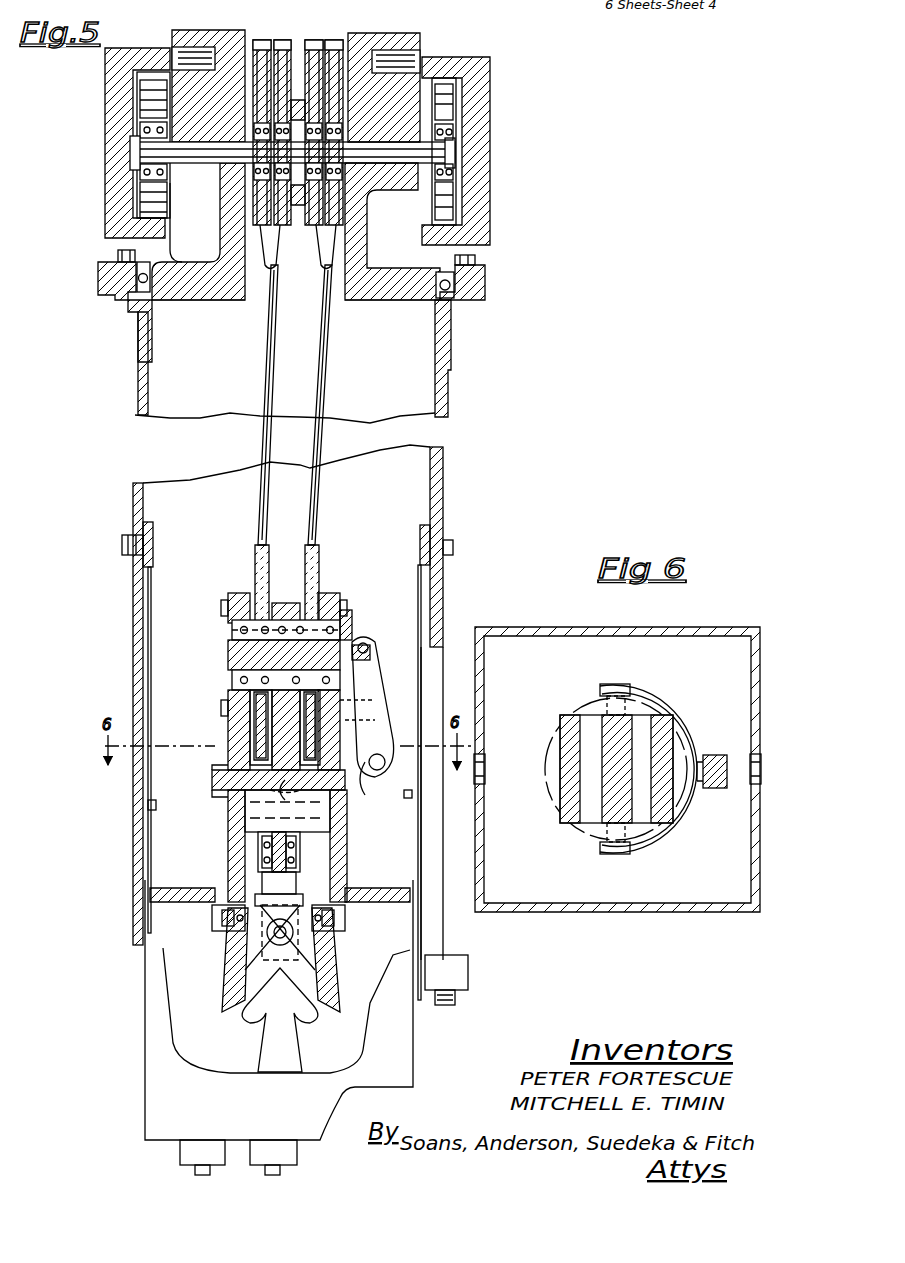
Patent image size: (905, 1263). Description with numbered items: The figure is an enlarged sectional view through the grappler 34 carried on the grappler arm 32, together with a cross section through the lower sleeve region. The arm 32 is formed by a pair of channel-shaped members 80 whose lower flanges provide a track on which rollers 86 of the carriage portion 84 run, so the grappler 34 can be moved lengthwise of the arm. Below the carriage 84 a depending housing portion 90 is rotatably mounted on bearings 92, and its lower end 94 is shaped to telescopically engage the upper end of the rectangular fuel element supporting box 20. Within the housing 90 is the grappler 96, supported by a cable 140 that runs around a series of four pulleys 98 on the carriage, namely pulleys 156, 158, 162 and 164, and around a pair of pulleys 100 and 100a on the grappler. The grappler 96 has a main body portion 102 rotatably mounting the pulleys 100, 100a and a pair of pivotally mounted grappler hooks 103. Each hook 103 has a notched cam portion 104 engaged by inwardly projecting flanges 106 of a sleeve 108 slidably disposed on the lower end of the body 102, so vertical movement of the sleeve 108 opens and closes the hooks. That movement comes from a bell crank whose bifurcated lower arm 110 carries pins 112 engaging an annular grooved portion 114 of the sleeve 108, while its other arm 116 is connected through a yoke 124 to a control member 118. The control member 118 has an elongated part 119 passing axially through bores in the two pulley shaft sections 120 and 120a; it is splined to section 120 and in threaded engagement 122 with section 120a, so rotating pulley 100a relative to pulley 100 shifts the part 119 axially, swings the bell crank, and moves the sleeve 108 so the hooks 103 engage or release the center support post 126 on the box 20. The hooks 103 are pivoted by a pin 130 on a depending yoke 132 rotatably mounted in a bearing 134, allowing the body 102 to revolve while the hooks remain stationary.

In FIG. 5, the fuel element supporting box 20 is at (415, 1045).
In FIG. 5, the grappler arm 32 is at (492, 152).
In FIG. 5, the grappler 34 is at (235, 355).
In FIG. 5, the channel-shaped members 80 is at (105, 198).
In FIG. 5, the carriage portion 84 is at (412, 34).
In FIG. 5, the rollers 86 is at (452, 202).
In FIG. 5, the housing portion 90 is at (452, 390).
In FIG. 5, the bearings 92 is at (436, 290).
In FIG. 5, the lower end of housing 94 is at (430, 940).
In FIG. 6, the lower end of housing 94 is at (617, 785).
In FIG. 5, the grappler 96 is at (225, 890).
In FIG. 5, the pulleys 98 is at (314, 44).
In FIG. 5, the pulley 100 is at (256, 552).
In FIG. 5, the pulley 100a is at (320, 553).
In FIG. 5, the main body portion 102 is at (232, 747).
In FIG. 5, the grappler hooks 103 is at (330, 970).
In FIG. 5, the notched cam portion 104 is at (212, 918).
In FIG. 5, the flanges 106 is at (333, 934).
In FIG. 5, the sleeve 108 is at (345, 862).
In FIG. 5, the bifurcated lower arm 110 is at (374, 780).
In FIG. 6, the bifurcated lower arm 110 is at (662, 700).
In FIG. 5, the pins 112 is at (300, 790).
In FIG. 6, the pins 112 is at (600, 690).
In FIG. 5, the annular grooved portion 114 is at (212, 782).
In FIG. 6, the annular grooved portion 114 is at (560, 790).
In FIG. 5, the bell crank arm 116 is at (375, 692).
In FIG. 5, the control member 118 is at (354, 640).
In FIG. 5, the elongated part 119 is at (230, 672).
In FIG. 5, the pulley shaft section 120 is at (232, 638).
In FIG. 5, the pulley shaft section 120a is at (290, 603).
In FIG. 5, the threaded engagement 122 is at (345, 622).
In FIG. 5, the yoke 124 is at (370, 652).
In FIG. 6, the yoke 124 is at (712, 771).
In FIG. 5, the center support post 126 is at (306, 1053).
In FIG. 5, the pin 130 is at (276, 942).
In FIG. 5, the depending yoke 132 is at (303, 897).
In FIG. 5, the bearing 134 is at (487, 290).
In FIG. 5, the cable 140 is at (277, 372).
In FIG. 5, the pulley 156 is at (336, 42).
In FIG. 5, the pulley 158 is at (320, 272).
In FIG. 5, the pulley 162 is at (268, 272).
In FIG. 5, the pulley 164 is at (262, 40).